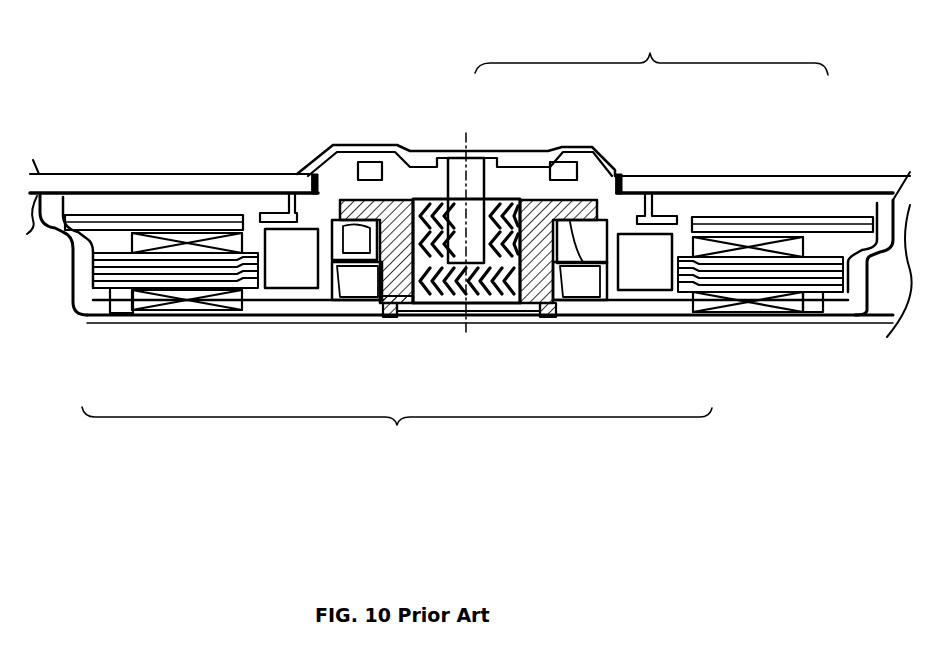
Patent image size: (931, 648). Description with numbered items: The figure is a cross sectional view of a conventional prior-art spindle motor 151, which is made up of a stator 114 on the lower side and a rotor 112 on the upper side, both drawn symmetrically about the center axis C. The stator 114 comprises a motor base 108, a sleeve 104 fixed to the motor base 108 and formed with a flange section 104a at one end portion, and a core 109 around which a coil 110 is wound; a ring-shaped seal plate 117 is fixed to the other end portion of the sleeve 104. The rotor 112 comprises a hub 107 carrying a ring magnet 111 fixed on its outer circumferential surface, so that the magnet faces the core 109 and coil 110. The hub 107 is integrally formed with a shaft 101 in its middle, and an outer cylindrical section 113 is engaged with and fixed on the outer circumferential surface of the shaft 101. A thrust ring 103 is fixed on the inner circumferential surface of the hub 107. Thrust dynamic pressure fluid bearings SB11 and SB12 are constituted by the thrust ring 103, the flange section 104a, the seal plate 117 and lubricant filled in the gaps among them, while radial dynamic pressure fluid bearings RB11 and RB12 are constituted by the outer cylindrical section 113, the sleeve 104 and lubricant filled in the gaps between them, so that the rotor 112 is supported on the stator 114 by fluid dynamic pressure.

The spindle motor 151 is at (141, 88).
The rotor 112 is at (674, 44).
The shaft 101 is at (488, 196).
The outer cylindrical section 113 is at (503, 203).
The hub 107 is at (577, 190).
The thrust ring 103 is at (643, 262).
The ring magnet 111 is at (590, 235).
The center axis C is at (462, 221).
The radial dynamic pressure fluid bearing RB11 is at (387, 198).
The radial dynamic pressure fluid bearing RB12 is at (388, 282).
The thrust dynamic pressure fluid bearing SB11 is at (335, 232).
The thrust dynamic pressure fluid bearing SB12 is at (355, 244).
The core 109 is at (83, 273).
The coil 110 is at (187, 305).
The seal plate 117 is at (356, 285).
The sleeve 104 is at (527, 296).
The flange section 104a is at (590, 300).
The motor base 108 is at (622, 308).
The stator 114 is at (421, 459).